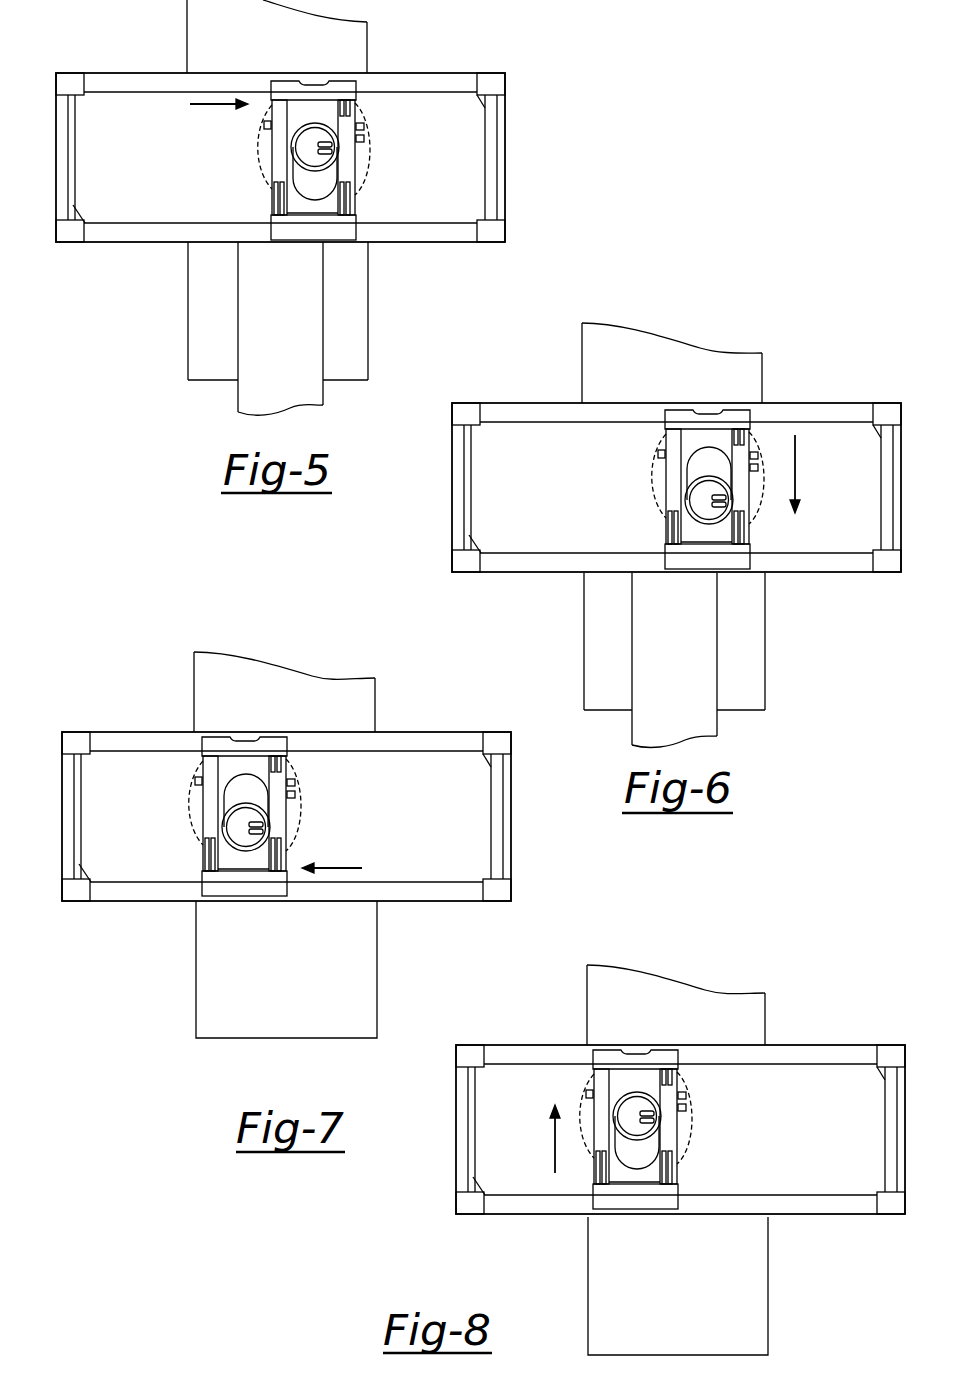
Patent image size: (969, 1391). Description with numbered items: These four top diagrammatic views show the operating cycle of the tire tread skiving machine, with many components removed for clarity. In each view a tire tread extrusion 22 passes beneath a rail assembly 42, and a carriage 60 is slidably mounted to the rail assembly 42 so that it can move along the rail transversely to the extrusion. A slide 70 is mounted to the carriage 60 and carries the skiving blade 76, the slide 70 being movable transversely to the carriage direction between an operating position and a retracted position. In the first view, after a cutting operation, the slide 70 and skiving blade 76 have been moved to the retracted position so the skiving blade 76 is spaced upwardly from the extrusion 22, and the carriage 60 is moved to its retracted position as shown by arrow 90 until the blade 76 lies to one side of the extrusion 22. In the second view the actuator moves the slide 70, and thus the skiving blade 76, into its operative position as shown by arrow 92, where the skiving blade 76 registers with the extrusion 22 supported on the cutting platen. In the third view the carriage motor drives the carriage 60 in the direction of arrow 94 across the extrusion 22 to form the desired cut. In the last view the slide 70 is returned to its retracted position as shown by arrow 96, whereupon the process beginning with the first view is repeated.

In FIG. 5, the tire tread extrusion 22 is at (298, 300).
In FIG. 6, the tire tread extrusion 22 is at (693, 630).
In FIG. 5, the rail assembly 42 is at (417, 83).
In FIG. 6, the rail assembly 42 is at (817, 413).
In FIG. 7, the rail assembly 42 is at (427, 738).
In FIG. 8, the rail assembly 42 is at (820, 1057).
In FIG. 5, the carriage 60 is at (277, 131).
In FIG. 7, the carriage 60 is at (273, 755).
In FIG. 5, the slide 70 is at (303, 110).
In FIG. 5, the skiving blade 76 is at (363, 173).
In FIG. 6, the skiving blade 76 is at (755, 525).
In FIG. 5, the arrow 90 is at (190, 104).
In FIG. 6, the arrow 92 is at (795, 475).
In FIG. 7, the arrow 94 is at (340, 868).
In FIG. 8, the arrow 96 is at (555, 1158).